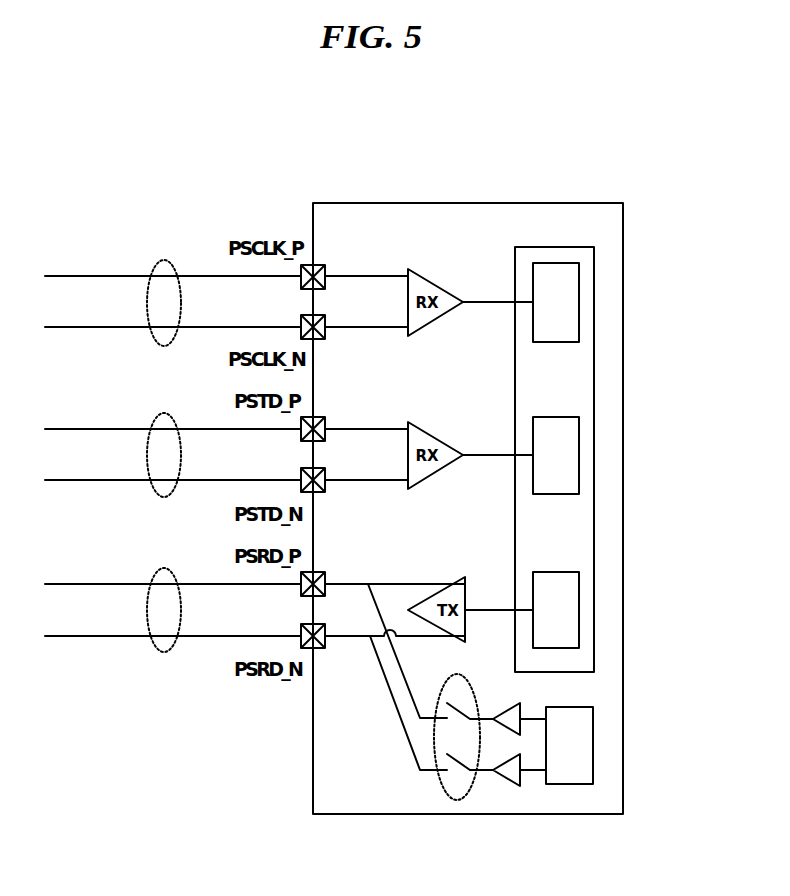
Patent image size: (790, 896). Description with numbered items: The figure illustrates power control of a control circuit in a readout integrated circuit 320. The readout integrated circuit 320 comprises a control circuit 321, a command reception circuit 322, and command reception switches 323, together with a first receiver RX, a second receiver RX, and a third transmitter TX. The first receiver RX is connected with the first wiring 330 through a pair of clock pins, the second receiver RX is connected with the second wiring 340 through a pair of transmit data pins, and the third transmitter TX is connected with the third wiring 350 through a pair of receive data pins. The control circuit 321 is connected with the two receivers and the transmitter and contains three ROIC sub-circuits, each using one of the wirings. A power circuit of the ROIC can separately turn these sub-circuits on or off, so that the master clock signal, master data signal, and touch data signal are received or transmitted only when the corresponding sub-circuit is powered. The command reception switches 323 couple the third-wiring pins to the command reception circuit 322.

The readout integrated circuit 320 is at (467, 203).
The control circuit 321 is at (594, 263).
The command reception circuit 322 is at (593, 747).
The command reception switches 323 is at (457, 800).
The first wiring 330 is at (164, 260).
The second wiring 340 is at (164, 413).
The third wiring 350 is at (164, 568).